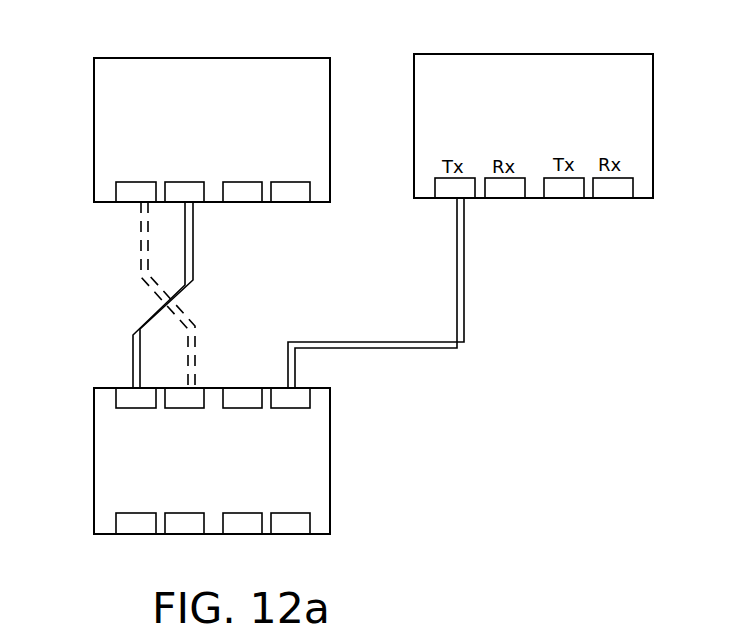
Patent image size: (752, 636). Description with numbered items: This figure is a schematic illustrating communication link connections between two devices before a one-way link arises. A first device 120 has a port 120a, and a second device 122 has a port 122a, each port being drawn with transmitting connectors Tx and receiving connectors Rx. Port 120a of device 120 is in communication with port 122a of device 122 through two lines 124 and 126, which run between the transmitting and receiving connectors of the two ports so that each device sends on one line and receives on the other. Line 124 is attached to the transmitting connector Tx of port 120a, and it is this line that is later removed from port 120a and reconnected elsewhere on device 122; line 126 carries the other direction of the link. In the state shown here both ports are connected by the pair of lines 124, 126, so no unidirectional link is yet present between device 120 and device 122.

The device 120 is at (212, 101).
The port 120a is at (213, 163).
The device 122 is at (250, 461).
The port 122a is at (330, 462).
The line 124 is at (141, 232).
The line 126 is at (196, 250).